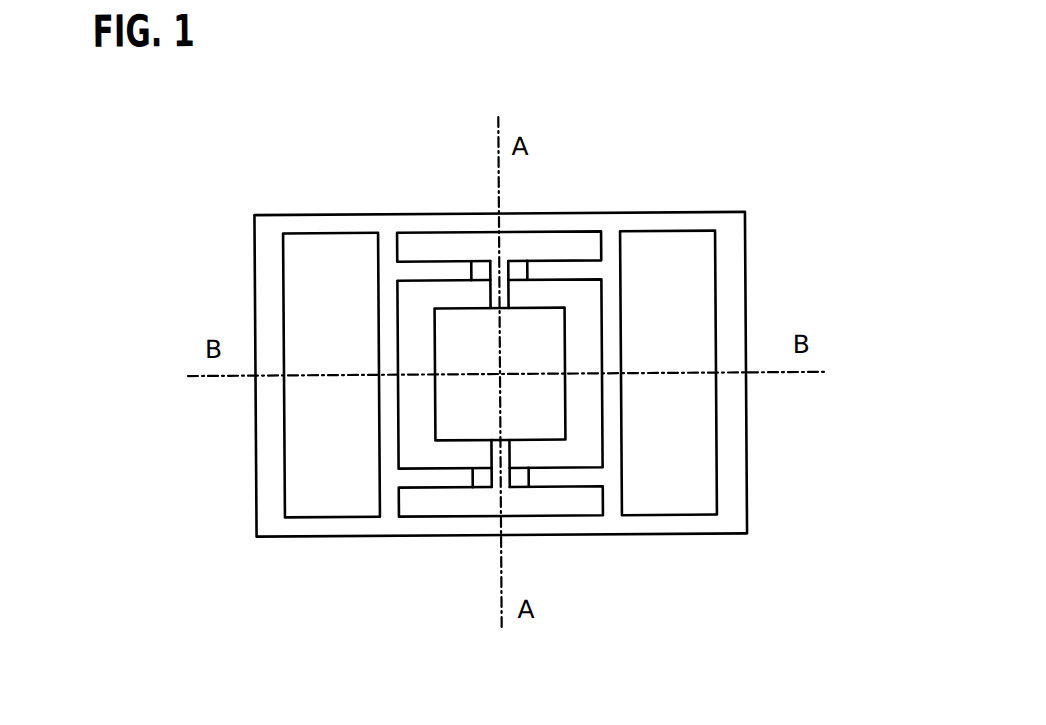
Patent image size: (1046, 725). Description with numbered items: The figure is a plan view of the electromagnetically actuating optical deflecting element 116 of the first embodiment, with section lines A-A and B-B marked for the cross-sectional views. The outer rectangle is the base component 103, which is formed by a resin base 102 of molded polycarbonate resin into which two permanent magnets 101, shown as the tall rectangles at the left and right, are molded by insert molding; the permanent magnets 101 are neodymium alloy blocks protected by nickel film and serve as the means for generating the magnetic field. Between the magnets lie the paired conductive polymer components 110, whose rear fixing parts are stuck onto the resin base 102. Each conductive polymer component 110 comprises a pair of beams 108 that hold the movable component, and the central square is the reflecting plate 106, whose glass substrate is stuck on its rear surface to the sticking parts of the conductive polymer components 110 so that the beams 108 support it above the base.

The permanent magnet 101 is at (284, 471).
The resin base 102 is at (667, 535).
The base component 103 is at (856, 562).
The reflecting plate 106 is at (463, 308).
The beam 108 is at (510, 290).
The conductive polymer component 110 is at (594, 232).
The electromagnetically actuating optical deflecting element 116 is at (848, 201).